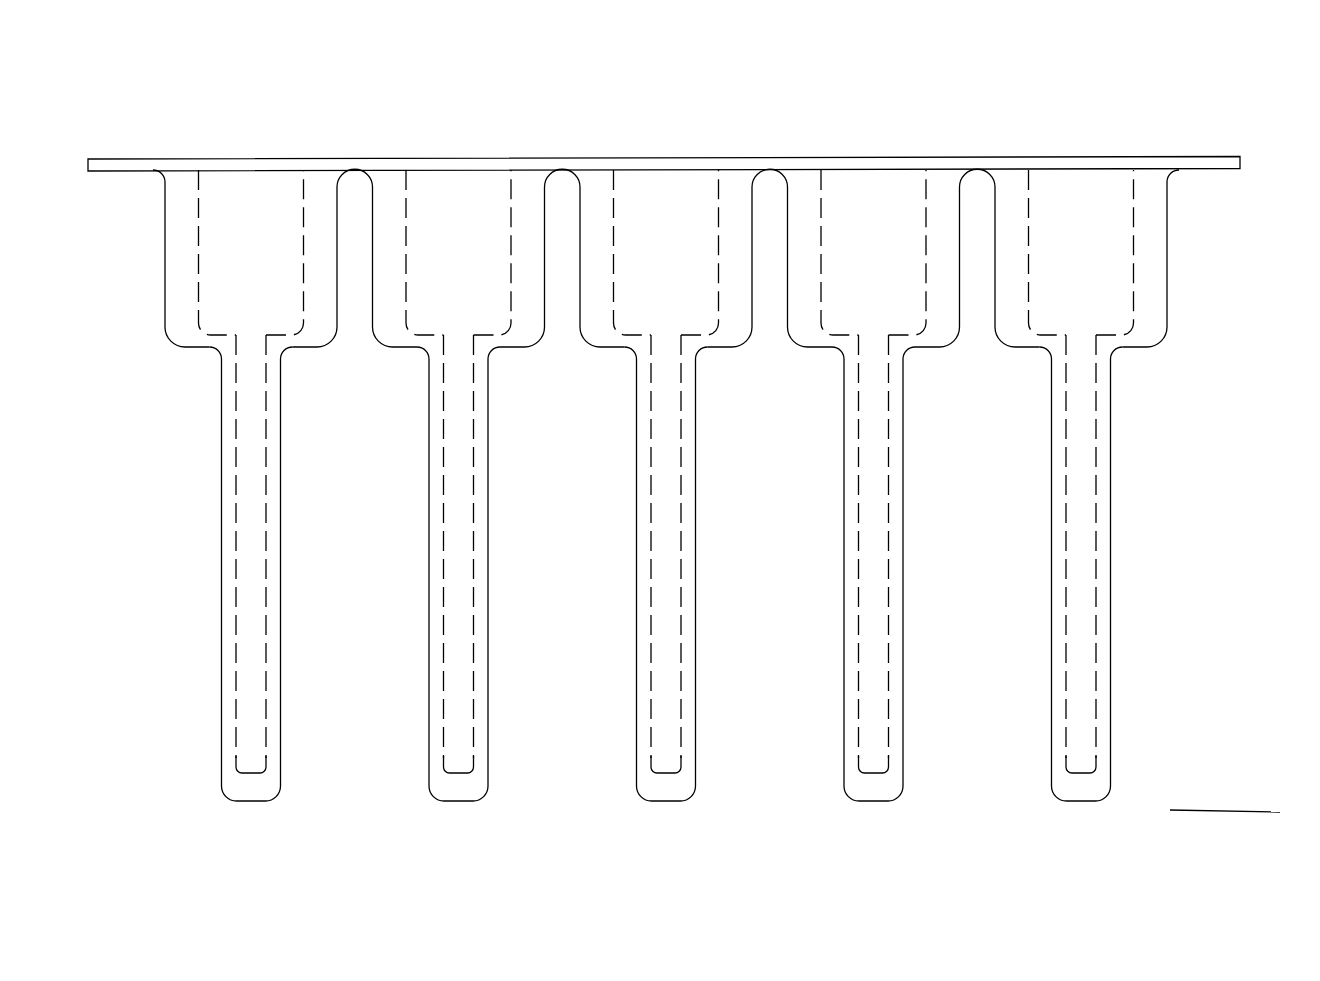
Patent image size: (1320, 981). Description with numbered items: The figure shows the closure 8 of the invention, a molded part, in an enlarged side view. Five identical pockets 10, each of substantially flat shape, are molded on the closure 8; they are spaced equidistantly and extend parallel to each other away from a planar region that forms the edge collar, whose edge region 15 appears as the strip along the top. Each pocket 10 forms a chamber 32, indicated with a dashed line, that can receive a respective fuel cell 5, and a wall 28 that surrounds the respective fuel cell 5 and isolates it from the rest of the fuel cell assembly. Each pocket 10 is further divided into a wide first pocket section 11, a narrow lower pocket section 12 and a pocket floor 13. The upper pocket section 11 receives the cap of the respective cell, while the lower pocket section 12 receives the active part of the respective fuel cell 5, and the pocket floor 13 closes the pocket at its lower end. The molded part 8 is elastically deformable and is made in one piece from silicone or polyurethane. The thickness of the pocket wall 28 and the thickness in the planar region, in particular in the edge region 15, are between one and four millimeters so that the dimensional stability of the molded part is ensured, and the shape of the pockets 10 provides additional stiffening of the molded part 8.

The closure 8 is at (1231, 73).
The pocket 10 is at (258, 180).
The edge region 15 is at (1197, 162).
The first pocket section 11 is at (1147, 247).
The chamber 32 is at (1112, 285).
The wall 28 is at (723, 564).
The lower pocket section 12 is at (723, 574).
The fuel cell 5 is at (1082, 622).
The pocket floor 13 is at (1077, 788).